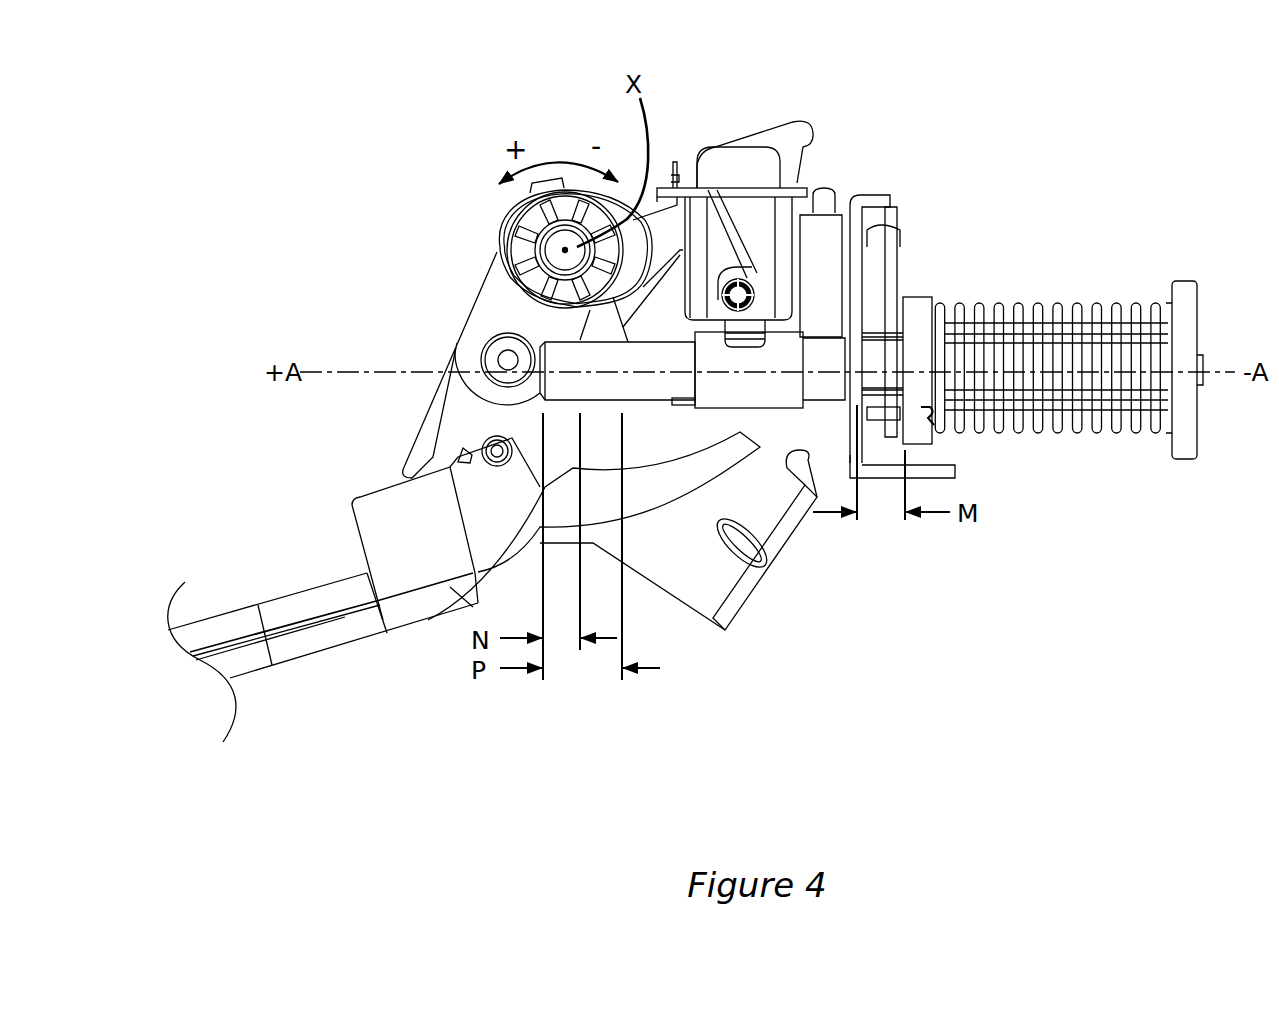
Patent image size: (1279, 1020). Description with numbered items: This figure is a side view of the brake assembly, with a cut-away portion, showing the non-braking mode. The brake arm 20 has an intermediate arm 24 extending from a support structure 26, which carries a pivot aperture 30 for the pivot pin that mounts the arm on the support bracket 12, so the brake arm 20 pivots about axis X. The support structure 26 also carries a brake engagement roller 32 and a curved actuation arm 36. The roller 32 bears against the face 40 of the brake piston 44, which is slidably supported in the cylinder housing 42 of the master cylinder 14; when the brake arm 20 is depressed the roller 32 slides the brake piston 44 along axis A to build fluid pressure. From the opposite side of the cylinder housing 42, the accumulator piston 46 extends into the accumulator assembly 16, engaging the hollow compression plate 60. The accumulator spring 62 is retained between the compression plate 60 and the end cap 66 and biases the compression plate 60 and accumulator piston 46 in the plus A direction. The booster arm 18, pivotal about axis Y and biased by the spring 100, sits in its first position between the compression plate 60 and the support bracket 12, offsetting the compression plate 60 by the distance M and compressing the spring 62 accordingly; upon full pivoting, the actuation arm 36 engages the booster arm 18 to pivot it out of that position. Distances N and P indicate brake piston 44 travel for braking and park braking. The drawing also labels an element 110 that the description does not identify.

The support bracket 12 is at (750, 618).
The master cylinder 14 is at (712, 128).
The accumulator assembly 16 is at (1142, 483).
The booster arm 18 is at (909, 253).
The brake arm 20 is at (420, 642).
The intermediate arm 24 is at (297, 597).
The support structure 26 is at (490, 282).
The pivot aperture 30 is at (565, 250).
The brake engagement roller 32 is at (481, 349).
The curved actuation arm 36 is at (678, 495).
The face 40 is at (540, 392).
The cylinder housing 42 is at (748, 405).
The brake piston 44 is at (563, 392).
The accumulator piston 46 is at (827, 398).
The compression plate 60 is at (922, 294).
The accumulator spring 62 is at (1085, 300).
The end cap 66 is at (1183, 282).
The spring 100 is at (880, 224).
The clip 110 is at (933, 424).